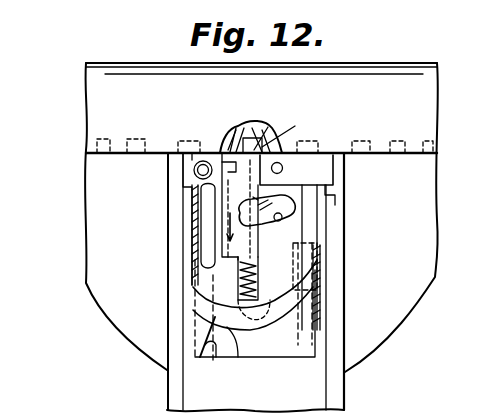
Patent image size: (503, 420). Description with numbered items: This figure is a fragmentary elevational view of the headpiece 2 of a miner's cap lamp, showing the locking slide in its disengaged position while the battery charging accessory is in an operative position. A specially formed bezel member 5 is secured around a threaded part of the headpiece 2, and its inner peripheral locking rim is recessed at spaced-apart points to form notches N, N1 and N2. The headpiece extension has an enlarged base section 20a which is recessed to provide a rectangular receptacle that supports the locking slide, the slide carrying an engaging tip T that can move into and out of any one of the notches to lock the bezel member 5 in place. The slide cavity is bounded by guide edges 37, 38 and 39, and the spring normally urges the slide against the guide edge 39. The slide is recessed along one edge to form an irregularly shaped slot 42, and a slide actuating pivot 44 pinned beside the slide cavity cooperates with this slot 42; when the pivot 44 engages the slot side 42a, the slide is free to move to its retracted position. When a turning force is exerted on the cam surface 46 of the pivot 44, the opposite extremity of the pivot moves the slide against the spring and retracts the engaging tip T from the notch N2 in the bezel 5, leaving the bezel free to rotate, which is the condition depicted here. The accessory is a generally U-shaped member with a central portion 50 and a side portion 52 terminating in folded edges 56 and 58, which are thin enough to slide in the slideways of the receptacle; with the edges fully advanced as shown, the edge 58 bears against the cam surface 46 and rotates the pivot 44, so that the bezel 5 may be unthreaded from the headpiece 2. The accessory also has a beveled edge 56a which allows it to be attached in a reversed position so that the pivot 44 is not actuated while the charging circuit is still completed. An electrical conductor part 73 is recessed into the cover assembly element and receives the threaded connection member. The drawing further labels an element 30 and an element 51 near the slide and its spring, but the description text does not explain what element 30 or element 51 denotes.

The headpiece 2 is at (413, 233).
The bezel member 5 is at (90, 126).
The base section 20a is at (333, 387).
The notch N is at (170, 157).
The notch N1 is at (262, 128).
The notch N2 is at (347, 157).
The engaging tip T is at (289, 130).
The spring 30 is at (254, 258).
The guide edge 37 is at (215, 146).
The guide edge 38 is at (242, 198).
The guide edge 39 is at (228, 147).
The slot 42 is at (242, 214).
The slot side 42a is at (242, 250).
The slide actuating pivot 44 is at (267, 210).
The cam surface 46 is at (305, 221).
The central portion 50 is at (270, 347).
The hatched strip 51 is at (225, 195).
The side portion 52 is at (212, 268).
The folded edge 56 is at (236, 262).
The beveled edge 56a is at (213, 348).
The folded edge 58 is at (300, 240).
The electrical conductor part 73 is at (196, 172).